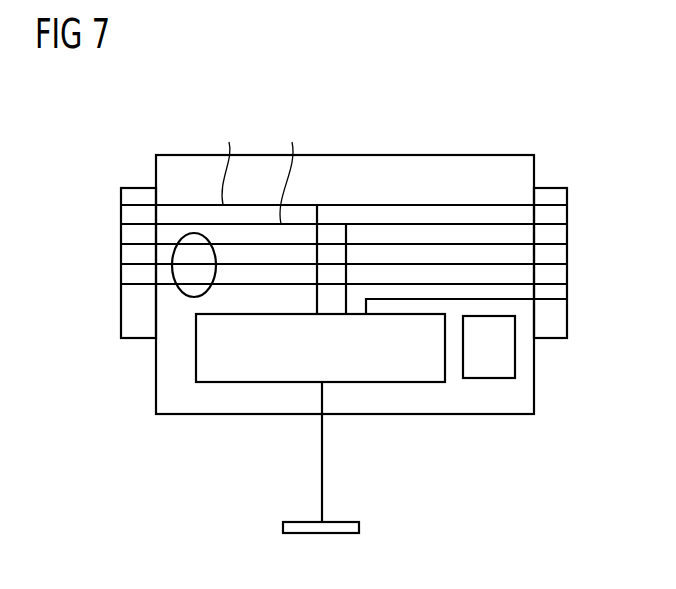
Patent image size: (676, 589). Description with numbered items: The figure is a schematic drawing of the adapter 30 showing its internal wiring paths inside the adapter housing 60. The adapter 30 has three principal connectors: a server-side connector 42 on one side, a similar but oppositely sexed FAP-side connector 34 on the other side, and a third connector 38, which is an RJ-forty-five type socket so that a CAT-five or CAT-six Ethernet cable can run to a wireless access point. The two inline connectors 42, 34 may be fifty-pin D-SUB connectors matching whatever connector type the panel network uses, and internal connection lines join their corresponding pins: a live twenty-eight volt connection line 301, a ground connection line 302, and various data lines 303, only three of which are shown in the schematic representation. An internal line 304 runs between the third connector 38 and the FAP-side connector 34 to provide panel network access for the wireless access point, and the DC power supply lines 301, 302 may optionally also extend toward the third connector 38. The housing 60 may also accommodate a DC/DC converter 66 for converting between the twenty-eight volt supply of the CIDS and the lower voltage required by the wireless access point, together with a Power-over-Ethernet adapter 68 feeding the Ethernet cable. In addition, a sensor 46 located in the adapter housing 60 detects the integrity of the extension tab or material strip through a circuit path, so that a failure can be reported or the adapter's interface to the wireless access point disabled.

The adapter 30 is at (98, 441).
The adapter housing 60 is at (208, 416).
The server-side connector 42 is at (132, 188).
The FAP-side connector 34 is at (553, 188).
The live 28V connection line 301 is at (382, 205).
The ground connection line 302 is at (443, 224).
The data lines 303 is at (186, 234).
The internal line 304 is at (552, 300).
The DC/DC converter 66 is at (258, 348).
The Power-over-Ethernet adapter 68 is at (196, 362).
The sensor 46 is at (516, 368).
The third connector 38 is at (283, 526).